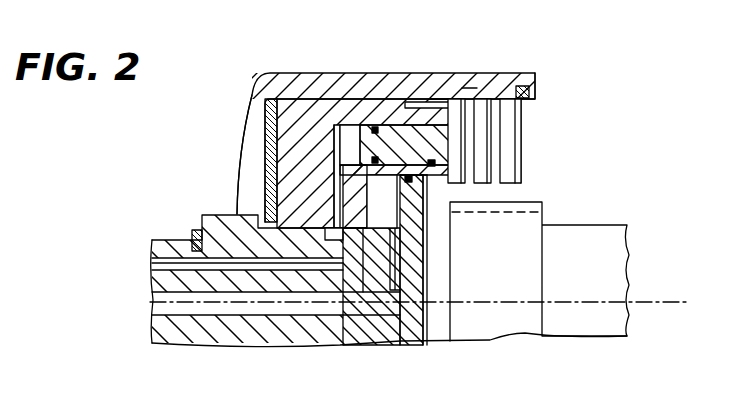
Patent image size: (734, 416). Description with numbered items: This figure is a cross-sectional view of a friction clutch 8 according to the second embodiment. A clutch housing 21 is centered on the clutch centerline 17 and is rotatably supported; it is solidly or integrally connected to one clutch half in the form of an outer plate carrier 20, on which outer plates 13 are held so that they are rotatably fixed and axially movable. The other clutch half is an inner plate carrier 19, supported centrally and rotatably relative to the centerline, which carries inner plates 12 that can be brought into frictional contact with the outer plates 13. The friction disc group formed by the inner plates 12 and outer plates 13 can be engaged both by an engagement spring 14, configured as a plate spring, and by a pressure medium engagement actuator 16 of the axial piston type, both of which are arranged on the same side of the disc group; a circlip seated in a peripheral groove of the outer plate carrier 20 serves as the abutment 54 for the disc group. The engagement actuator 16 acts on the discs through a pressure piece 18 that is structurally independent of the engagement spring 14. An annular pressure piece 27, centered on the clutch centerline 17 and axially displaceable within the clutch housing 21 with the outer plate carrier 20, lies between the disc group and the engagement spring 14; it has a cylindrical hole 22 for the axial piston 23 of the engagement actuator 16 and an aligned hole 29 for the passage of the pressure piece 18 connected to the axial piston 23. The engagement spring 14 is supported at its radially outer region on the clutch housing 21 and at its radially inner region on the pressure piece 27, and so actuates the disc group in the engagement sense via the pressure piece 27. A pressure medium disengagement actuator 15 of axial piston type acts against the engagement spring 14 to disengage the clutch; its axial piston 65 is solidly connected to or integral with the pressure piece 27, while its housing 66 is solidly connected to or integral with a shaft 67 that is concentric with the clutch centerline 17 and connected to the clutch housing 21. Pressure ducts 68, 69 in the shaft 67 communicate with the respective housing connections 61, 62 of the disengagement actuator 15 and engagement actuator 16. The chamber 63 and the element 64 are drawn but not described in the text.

The friction clutch 8 is at (550, 94).
The inner plates 12 is at (498, 198).
The outer plates 13 is at (513, 108).
The engagement spring 14 is at (262, 185).
The disengagement actuator 15 is at (382, 258).
The engagement actuator 16 is at (366, 118).
The clutch centerline 17 is at (168, 325).
The pressure piece 18 is at (436, 96).
The inner plate carrier 19 is at (497, 252).
The outer plate carrier 20 is at (470, 80).
The clutch housing 21 is at (252, 108).
The cylindrical hole 22 is at (340, 100).
The axial piston 23 is at (395, 145).
The pressure piece 27 is at (440, 215).
The aligned hole 29 is at (437, 205).
The abutment 54 is at (528, 100).
The housing connection 61 is at (343, 262).
The housing connection 62 is at (410, 250).
The chamber 63 is at (372, 213).
The bearing 64 is at (352, 133).
The axial piston 65 is at (366, 243).
The housing 66 is at (434, 196).
The shaft 67 is at (262, 315).
The pressure duct 68 is at (185, 262).
The pressure duct 69 is at (218, 315).